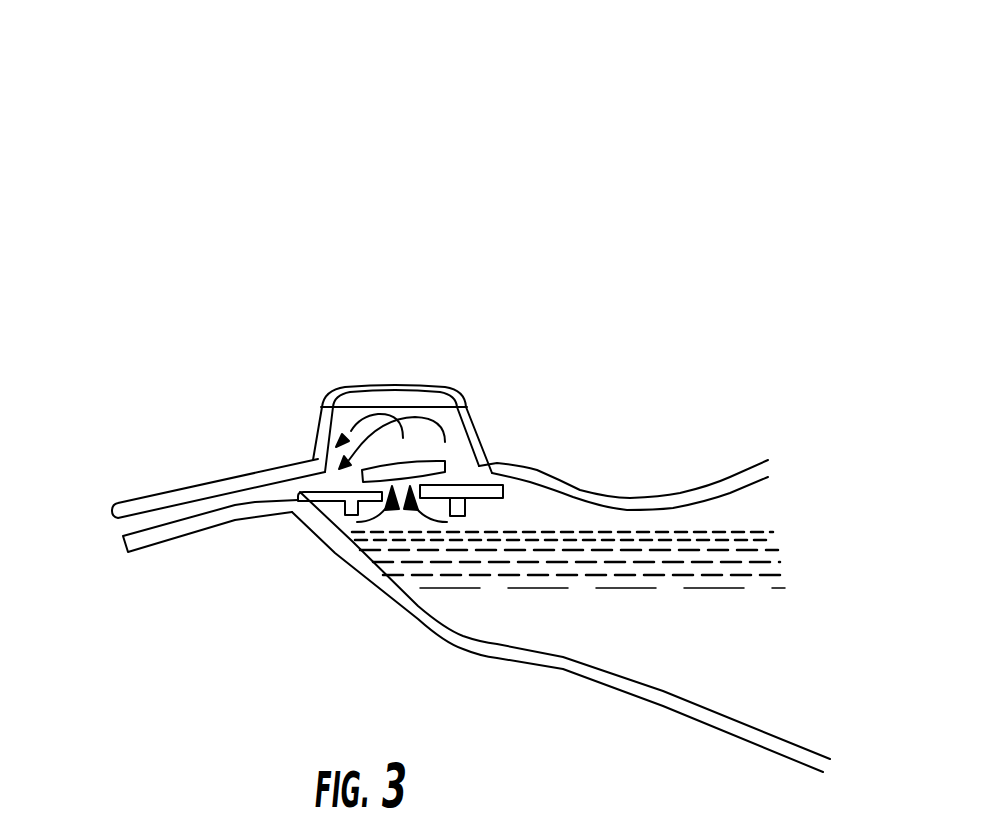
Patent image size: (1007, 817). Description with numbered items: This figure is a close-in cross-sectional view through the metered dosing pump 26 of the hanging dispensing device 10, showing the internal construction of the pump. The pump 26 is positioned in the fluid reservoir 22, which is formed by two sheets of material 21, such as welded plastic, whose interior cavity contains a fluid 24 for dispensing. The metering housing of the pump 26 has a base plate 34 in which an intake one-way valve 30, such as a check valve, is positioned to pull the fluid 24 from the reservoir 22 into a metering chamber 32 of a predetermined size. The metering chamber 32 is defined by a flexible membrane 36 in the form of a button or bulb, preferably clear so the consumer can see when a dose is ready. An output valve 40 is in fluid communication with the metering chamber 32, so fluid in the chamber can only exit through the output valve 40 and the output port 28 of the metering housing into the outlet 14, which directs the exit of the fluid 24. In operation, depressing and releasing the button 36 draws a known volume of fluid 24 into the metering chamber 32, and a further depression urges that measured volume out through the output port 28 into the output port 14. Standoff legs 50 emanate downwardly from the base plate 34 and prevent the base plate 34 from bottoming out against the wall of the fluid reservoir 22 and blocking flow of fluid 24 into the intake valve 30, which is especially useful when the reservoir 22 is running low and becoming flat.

The dispensing device 10 is at (762, 338).
The output port 14 is at (138, 525).
The sheets of material 21 is at (728, 473).
The fluid reservoir 22 is at (713, 640).
The fluid 24 is at (655, 627).
The metered dosing pump 26 is at (480, 393).
The output port of the metering housing 28 is at (300, 492).
The intake one-way valve 30 is at (427, 462).
The metering chamber 32 is at (385, 400).
The base plate 34 is at (467, 493).
The flexible membrane 36 is at (358, 387).
The output valve 40 is at (313, 460).
The standoff legs 50 is at (462, 516).